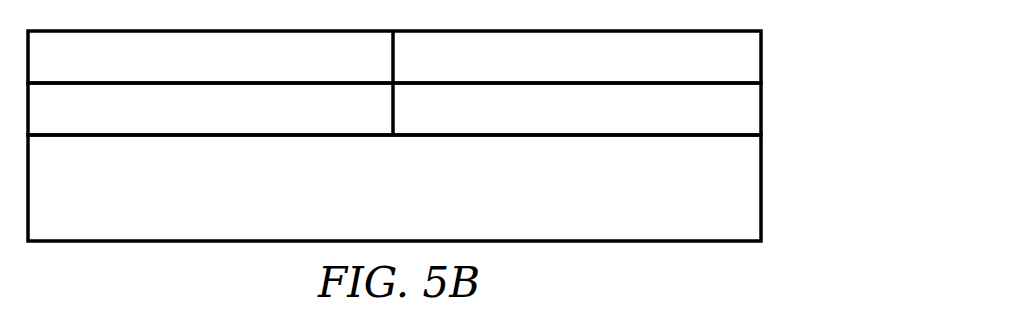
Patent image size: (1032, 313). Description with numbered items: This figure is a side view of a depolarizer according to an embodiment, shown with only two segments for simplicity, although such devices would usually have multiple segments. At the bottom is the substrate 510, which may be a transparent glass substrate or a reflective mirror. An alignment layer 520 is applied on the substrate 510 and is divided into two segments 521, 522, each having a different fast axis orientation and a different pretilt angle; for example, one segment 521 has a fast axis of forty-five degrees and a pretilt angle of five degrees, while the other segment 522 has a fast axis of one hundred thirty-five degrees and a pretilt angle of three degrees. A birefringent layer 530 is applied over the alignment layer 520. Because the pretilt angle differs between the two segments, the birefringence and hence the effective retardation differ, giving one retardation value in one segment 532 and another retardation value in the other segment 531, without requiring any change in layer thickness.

The substrate 510 is at (762, 198).
The alignment layer 520 is at (762, 117).
The segment 521 is at (248, 127).
The segment 522 is at (608, 127).
The birefringent layer 530 is at (762, 58).
The segment 531 is at (248, 75).
The segment 532 is at (608, 75).